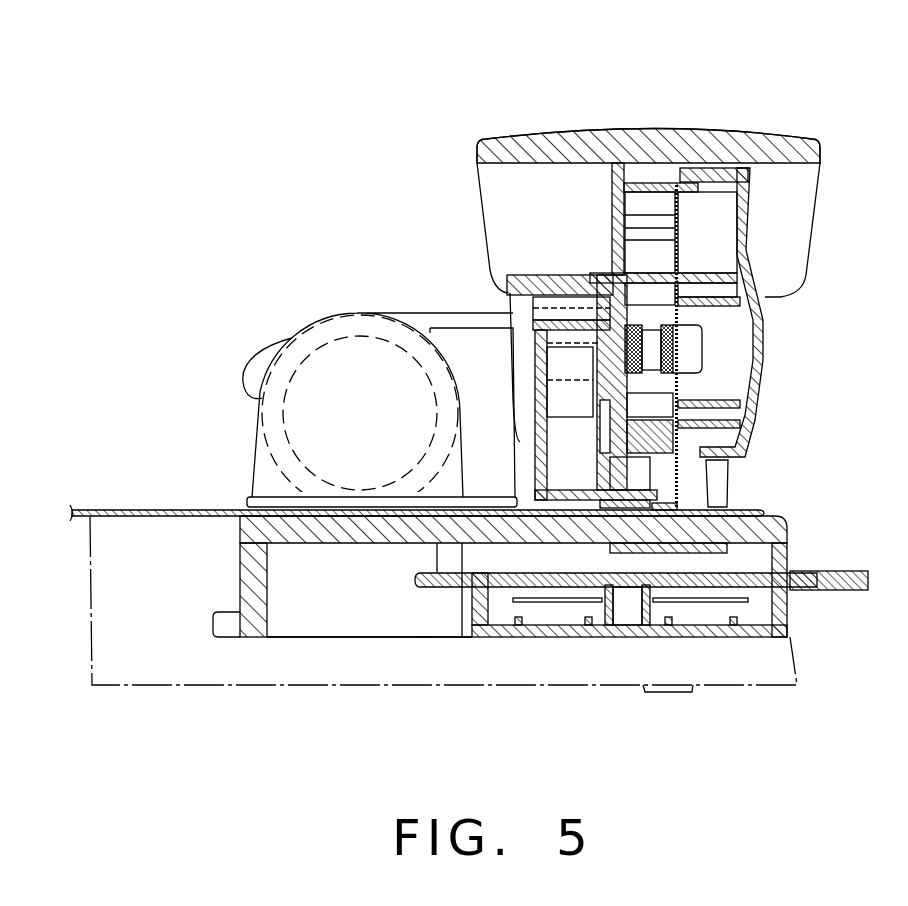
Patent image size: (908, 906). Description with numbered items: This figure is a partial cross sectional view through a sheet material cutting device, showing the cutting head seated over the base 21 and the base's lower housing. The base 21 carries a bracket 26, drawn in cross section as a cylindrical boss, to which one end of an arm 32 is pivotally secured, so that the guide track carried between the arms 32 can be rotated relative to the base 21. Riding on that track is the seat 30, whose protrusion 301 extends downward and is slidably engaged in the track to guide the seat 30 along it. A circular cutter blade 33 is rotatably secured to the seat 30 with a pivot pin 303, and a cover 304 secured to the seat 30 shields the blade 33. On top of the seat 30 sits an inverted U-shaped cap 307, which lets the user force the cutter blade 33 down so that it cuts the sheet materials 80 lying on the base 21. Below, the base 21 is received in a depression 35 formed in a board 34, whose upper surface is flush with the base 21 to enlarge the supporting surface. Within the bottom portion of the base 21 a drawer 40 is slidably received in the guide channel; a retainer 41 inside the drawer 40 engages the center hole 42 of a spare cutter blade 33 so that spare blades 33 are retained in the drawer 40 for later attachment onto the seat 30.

The base 21 is at (317, 637).
The bracket 26 is at (338, 340).
The seat 30 is at (810, 133).
The arm 32 is at (447, 312).
The circular cutter blade 33 is at (700, 482).
The board 34 is at (156, 668).
The depression 35 is at (413, 636).
The drawer 40 is at (787, 547).
The retainer 41 is at (572, 592).
The center hole 42 is at (667, 592).
The sheet materials 80 is at (162, 508).
The protrusion 301 is at (567, 343).
The pivot pin 303 is at (650, 350).
The cover 304 is at (752, 387).
The inverted U-shaped cap 307 is at (707, 142).